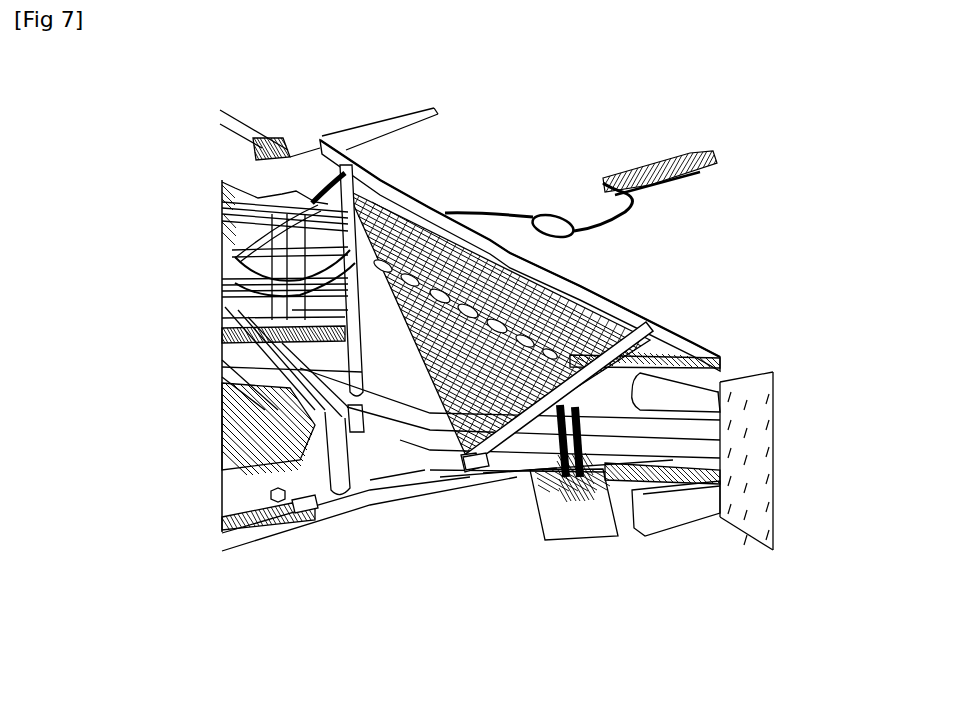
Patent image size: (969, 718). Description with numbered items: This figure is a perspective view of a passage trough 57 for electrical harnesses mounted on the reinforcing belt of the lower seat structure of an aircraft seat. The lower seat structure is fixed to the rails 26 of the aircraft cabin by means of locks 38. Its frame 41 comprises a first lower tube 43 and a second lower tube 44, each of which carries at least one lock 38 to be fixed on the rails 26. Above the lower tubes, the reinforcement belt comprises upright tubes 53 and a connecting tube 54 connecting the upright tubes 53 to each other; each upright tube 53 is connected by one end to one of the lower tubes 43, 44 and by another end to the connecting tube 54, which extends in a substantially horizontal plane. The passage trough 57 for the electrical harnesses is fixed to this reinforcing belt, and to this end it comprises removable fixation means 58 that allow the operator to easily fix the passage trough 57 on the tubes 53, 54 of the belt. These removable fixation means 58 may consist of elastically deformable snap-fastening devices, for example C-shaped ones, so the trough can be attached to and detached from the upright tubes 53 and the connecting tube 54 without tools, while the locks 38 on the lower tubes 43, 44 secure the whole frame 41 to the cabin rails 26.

The rails 26 is at (622, 548).
The lock 38 is at (572, 480).
The frame 41 is at (212, 543).
The first lower tube 43 is at (325, 513).
The second lower tube 44 is at (635, 370).
The upright tubes 53 is at (385, 300).
The connecting tube 54 is at (403, 183).
The passage trough 57 is at (535, 303).
The removable fixation means 58 is at (290, 388).